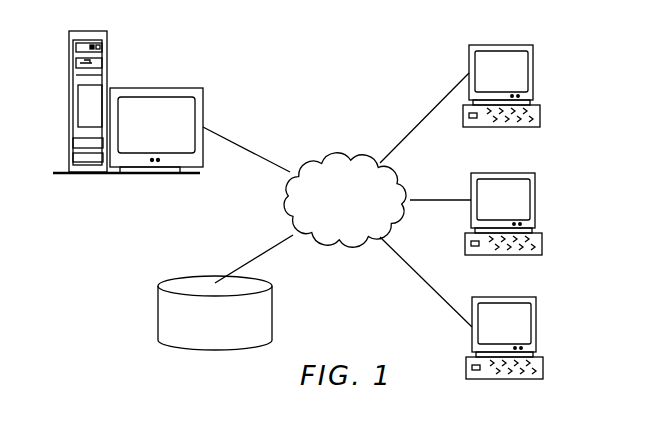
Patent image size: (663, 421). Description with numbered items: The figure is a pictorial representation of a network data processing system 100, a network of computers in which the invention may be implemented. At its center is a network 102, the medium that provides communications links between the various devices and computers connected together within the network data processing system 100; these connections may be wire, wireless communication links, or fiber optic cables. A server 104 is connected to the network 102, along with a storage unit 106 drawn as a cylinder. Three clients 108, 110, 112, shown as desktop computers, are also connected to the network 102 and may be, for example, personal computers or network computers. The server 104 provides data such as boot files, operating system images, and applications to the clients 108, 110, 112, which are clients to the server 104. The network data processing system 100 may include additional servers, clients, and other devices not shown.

The network data processing system 100 is at (389, 51).
The network 102 is at (316, 160).
The server 104 is at (70, 105).
The storage unit 106 is at (158, 312).
The client 108 is at (533, 73).
The client 110 is at (534, 198).
The client 112 is at (537, 325).